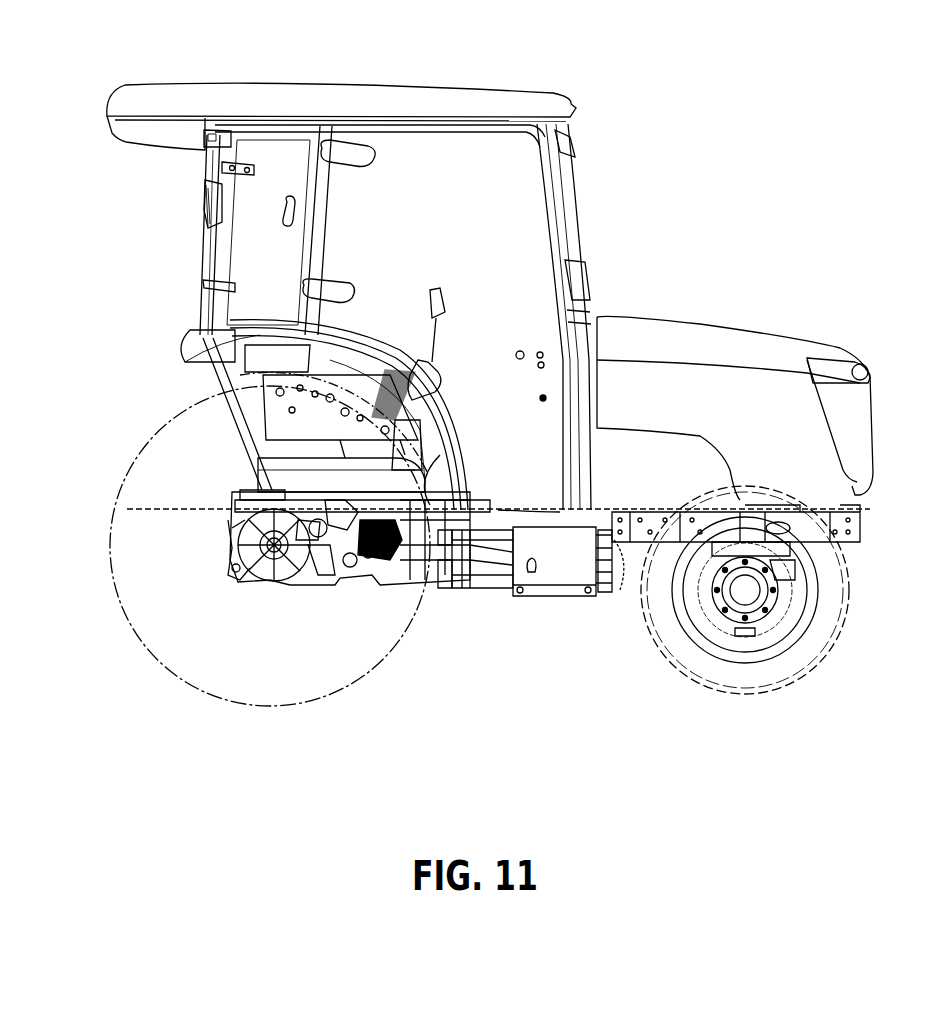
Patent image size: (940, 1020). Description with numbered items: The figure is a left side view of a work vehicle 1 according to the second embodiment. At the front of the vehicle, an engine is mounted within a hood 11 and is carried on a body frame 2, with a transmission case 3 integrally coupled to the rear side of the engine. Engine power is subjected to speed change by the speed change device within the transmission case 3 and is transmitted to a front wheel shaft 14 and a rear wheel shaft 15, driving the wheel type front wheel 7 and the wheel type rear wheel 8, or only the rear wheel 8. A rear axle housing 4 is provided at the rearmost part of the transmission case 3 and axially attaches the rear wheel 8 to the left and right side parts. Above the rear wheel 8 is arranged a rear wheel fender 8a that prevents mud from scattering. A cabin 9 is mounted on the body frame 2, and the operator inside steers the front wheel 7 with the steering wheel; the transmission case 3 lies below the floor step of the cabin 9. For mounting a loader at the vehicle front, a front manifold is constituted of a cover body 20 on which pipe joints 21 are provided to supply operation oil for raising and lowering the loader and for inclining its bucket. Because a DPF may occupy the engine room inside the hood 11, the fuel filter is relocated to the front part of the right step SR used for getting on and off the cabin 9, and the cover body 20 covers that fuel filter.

The tractor 1 is at (695, 137).
The body frame 2 is at (862, 532).
The transmission case 3 is at (402, 592).
The rear axle housing 4 is at (238, 518).
The front wheel 7 is at (700, 676).
The rear wheel 8 is at (322, 683).
The rear wheel fender 8a is at (205, 338).
The cabin 9 is at (450, 160).
The hood 11 is at (695, 340).
The front wheel shaft 14 is at (752, 594).
The rear wheel shaft 15 is at (255, 576).
The cover body 20 is at (567, 582).
The pipe joint 21 is at (600, 600).
The right step SR is at (488, 592).